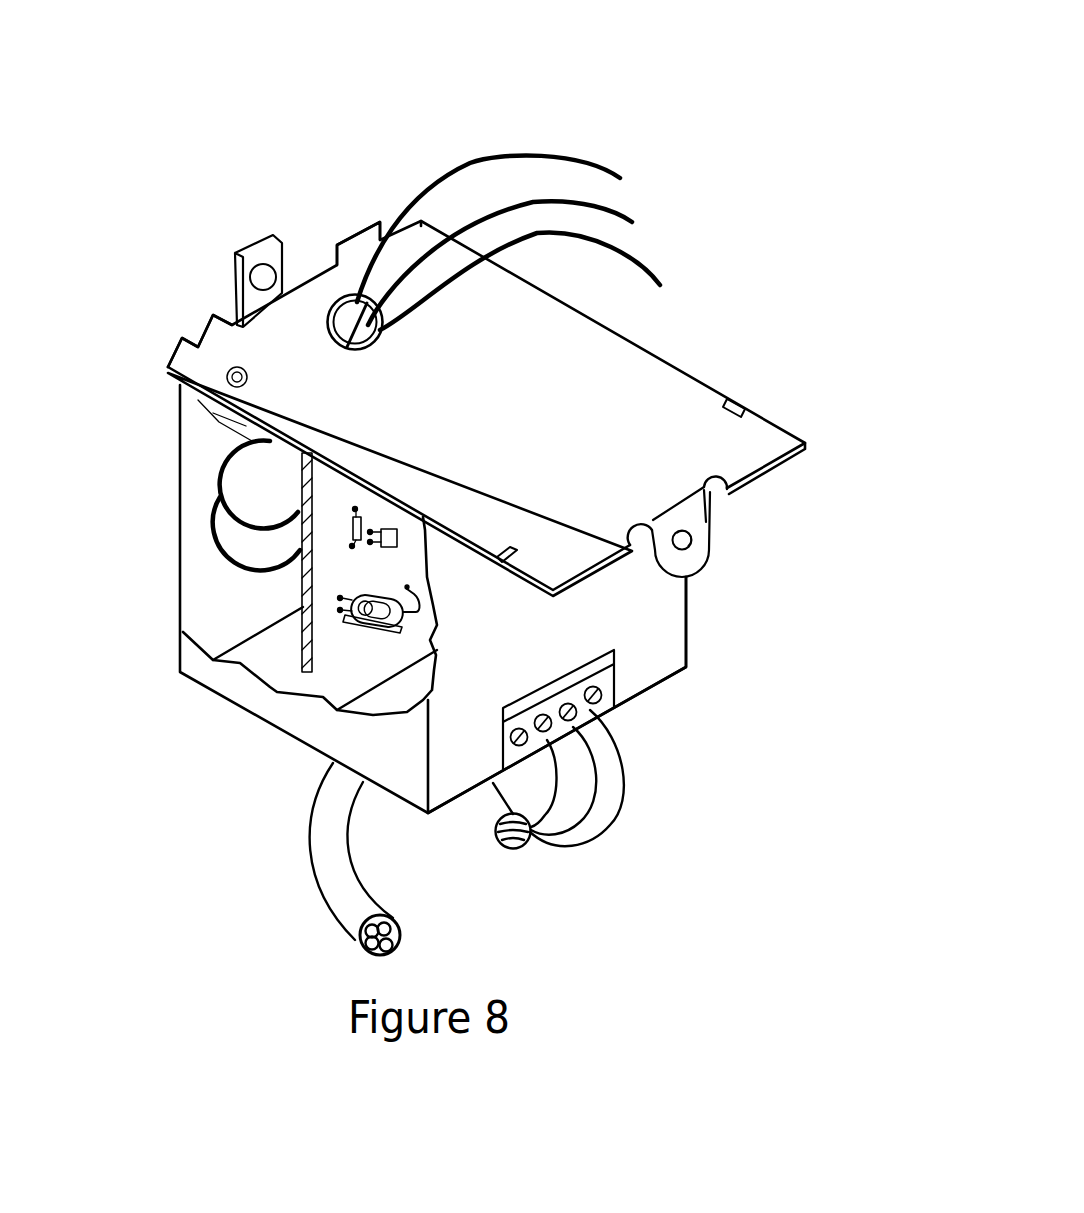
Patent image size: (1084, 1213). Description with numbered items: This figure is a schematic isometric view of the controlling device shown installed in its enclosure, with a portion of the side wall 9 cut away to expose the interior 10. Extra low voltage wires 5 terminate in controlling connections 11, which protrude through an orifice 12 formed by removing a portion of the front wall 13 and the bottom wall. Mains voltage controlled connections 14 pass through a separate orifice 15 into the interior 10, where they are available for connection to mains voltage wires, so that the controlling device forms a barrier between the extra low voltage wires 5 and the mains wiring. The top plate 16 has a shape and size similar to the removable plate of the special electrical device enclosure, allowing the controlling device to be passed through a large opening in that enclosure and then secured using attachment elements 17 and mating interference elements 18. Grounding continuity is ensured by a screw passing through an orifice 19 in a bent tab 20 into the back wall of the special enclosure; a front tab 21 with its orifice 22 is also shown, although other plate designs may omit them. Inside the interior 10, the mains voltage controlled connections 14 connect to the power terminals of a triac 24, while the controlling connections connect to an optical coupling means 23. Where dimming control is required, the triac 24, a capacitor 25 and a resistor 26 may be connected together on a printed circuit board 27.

The extra low voltage wires 5 is at (387, 902).
The side wall 9 is at (333, 745).
The interior 10 is at (268, 650).
The controlling connections 11 is at (580, 710).
The orifice 12 is at (617, 678).
The front wall 13 is at (653, 630).
The mains voltage controlled connections 14 is at (620, 167).
The orifice 15 is at (334, 302).
The top plate 16 is at (662, 408).
The attachment elements 17 is at (193, 317).
The mating interference elements 18 is at (750, 400).
The orifice 19 is at (262, 277).
The bent tab 20 is at (342, 314).
The front tab 21 is at (653, 520).
The orifice 22 is at (693, 538).
The optical coupling means 23 is at (360, 592).
The triac 24 is at (270, 441).
The capacitor 25 is at (381, 528).
The resistor 26 is at (350, 515).
The printed circuit board 27 is at (303, 670).